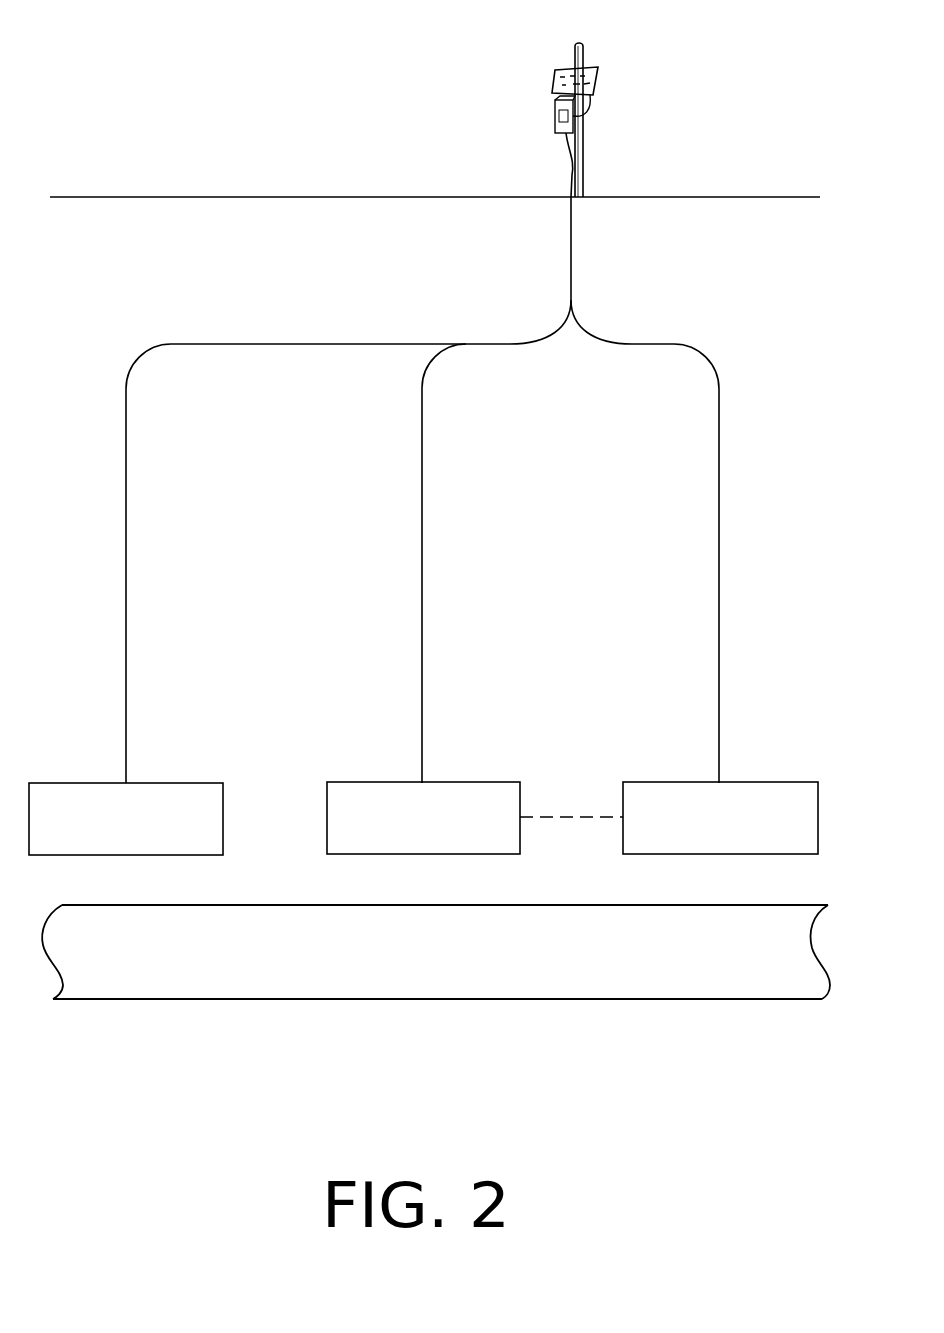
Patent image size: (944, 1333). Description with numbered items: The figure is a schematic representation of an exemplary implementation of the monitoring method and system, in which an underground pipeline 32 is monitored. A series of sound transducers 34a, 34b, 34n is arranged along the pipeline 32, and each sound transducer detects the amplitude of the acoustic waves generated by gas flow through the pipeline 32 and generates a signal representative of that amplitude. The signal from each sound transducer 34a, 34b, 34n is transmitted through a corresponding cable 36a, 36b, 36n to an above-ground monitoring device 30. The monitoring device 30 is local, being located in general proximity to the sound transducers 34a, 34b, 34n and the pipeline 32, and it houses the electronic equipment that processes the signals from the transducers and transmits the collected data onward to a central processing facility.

The monitoring device 30 is at (556, 70).
The pipeline 32 is at (617, 985).
The sound transducer 34a is at (176, 790).
The sound transducer 34b is at (478, 788).
The sound transducer 34n is at (770, 788).
The cable 36a is at (128, 571).
The cable 36b is at (423, 573).
The cable 36n is at (721, 581).